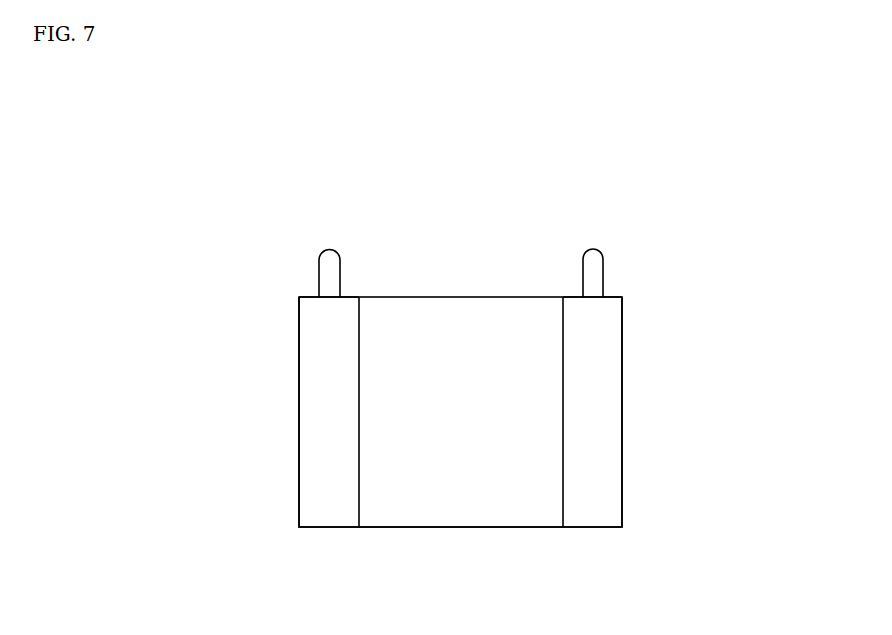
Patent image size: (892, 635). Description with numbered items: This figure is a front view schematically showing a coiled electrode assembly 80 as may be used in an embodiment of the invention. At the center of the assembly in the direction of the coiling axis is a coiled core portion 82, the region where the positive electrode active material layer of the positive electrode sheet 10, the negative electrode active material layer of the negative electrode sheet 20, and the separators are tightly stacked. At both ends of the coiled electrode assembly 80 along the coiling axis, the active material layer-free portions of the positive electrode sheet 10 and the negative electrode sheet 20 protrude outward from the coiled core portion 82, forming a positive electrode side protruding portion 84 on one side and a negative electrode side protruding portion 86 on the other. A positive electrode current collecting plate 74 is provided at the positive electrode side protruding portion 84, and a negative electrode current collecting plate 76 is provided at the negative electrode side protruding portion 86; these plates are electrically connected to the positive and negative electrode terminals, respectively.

The coiled electrode assembly 80 is at (251, 225).
The positive electrode sheet 10 is at (624, 408).
The negative electrode sheet 20 is at (298, 410).
The positive electrode current collecting plate 74 is at (593, 252).
The negative electrode current collecting plate 76 is at (330, 246).
The coiled core portion 82 is at (510, 515).
The positive electrode side protruding portion 84 is at (612, 478).
The negative electrode side protruding portion 86 is at (310, 478).